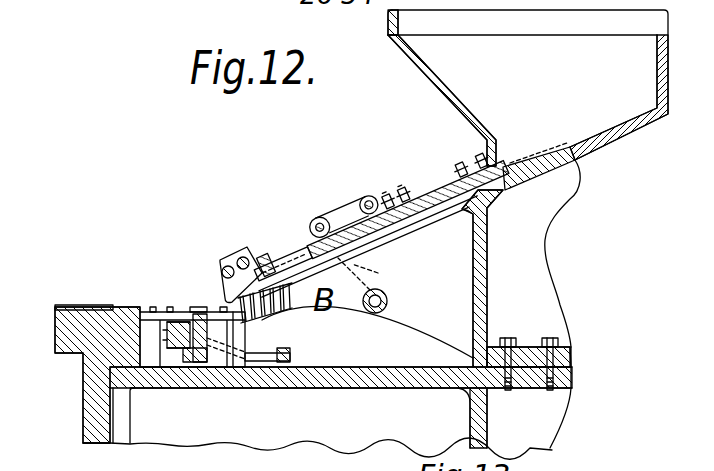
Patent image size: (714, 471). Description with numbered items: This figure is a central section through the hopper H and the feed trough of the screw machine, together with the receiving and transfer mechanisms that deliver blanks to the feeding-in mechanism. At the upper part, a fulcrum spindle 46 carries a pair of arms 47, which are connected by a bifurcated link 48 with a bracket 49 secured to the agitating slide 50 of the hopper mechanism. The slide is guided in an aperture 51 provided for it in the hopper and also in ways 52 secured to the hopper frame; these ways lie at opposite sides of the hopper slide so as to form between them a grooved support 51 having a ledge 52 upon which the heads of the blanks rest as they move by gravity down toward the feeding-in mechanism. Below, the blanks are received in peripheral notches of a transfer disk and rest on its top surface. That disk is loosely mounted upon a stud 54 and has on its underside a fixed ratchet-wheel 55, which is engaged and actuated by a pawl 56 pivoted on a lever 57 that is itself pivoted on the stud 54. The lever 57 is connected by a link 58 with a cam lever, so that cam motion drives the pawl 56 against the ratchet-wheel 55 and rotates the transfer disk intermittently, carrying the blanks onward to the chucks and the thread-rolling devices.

The hopper H is at (667, 72).
The fulcrum spindle 46 is at (388, 302).
The arms 47 is at (384, 275).
The bifurcated link 48 is at (333, 213).
The bracket 49 is at (370, 196).
The agitating slide 50 is at (426, 206).
The aperture 51 is at (414, 190).
The ways 52 is at (431, 224).
The stud 54 is at (177, 313).
The ratchet-wheel 55 is at (213, 313).
The pawl 56 is at (150, 310).
The lever 57 is at (147, 308).
The link 58 is at (292, 354).